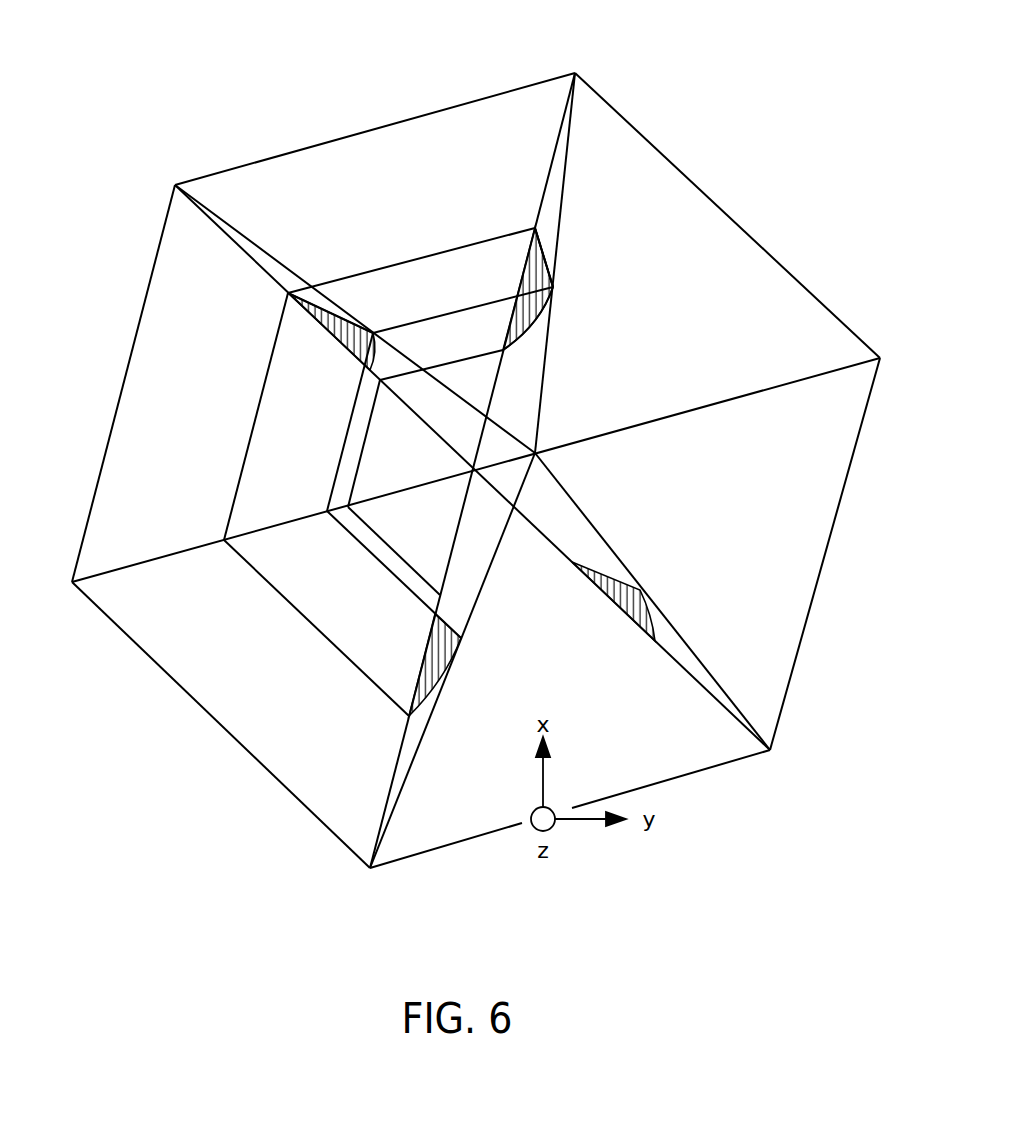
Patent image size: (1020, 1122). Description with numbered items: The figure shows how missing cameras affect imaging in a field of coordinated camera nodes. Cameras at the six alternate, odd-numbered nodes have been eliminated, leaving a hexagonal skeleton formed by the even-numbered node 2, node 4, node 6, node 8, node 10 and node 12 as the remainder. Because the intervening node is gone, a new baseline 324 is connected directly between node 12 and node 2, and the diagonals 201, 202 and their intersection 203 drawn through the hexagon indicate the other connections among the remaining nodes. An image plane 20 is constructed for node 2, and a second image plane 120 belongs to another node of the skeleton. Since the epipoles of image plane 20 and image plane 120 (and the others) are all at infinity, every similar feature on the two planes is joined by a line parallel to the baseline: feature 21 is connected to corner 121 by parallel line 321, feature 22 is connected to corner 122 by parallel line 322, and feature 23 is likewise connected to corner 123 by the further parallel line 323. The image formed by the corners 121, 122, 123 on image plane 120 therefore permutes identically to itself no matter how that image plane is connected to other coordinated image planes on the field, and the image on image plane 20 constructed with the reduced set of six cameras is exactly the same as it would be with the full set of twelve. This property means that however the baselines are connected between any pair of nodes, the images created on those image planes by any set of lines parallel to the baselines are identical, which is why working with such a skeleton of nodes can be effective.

The node 2 is at (575, 73).
The node 4 is at (880, 358).
The node 6 is at (770, 750).
The node 8 is at (370, 868).
The node 10 is at (72, 582).
The node 12 is at (175, 185).
The image plane 20 is at (535, 257).
The feature 21 is at (535, 228).
The feature 22 is at (505, 349).
The feature 23 is at (553, 287).
The image plane 120 is at (317, 314).
The corner 121 is at (288, 293).
The corner 122 is at (380, 380).
The corner 123 is at (373, 333).
The diagonal line 201 is at (575, 506).
The diagonal line 202 is at (572, 504).
The diagonal intersection point 203 is at (538, 455).
The parallel line 321 is at (428, 258).
The parallel line 322 is at (497, 350).
The block edge 323 is at (497, 302).
The baseline 324 is at (370, 130).